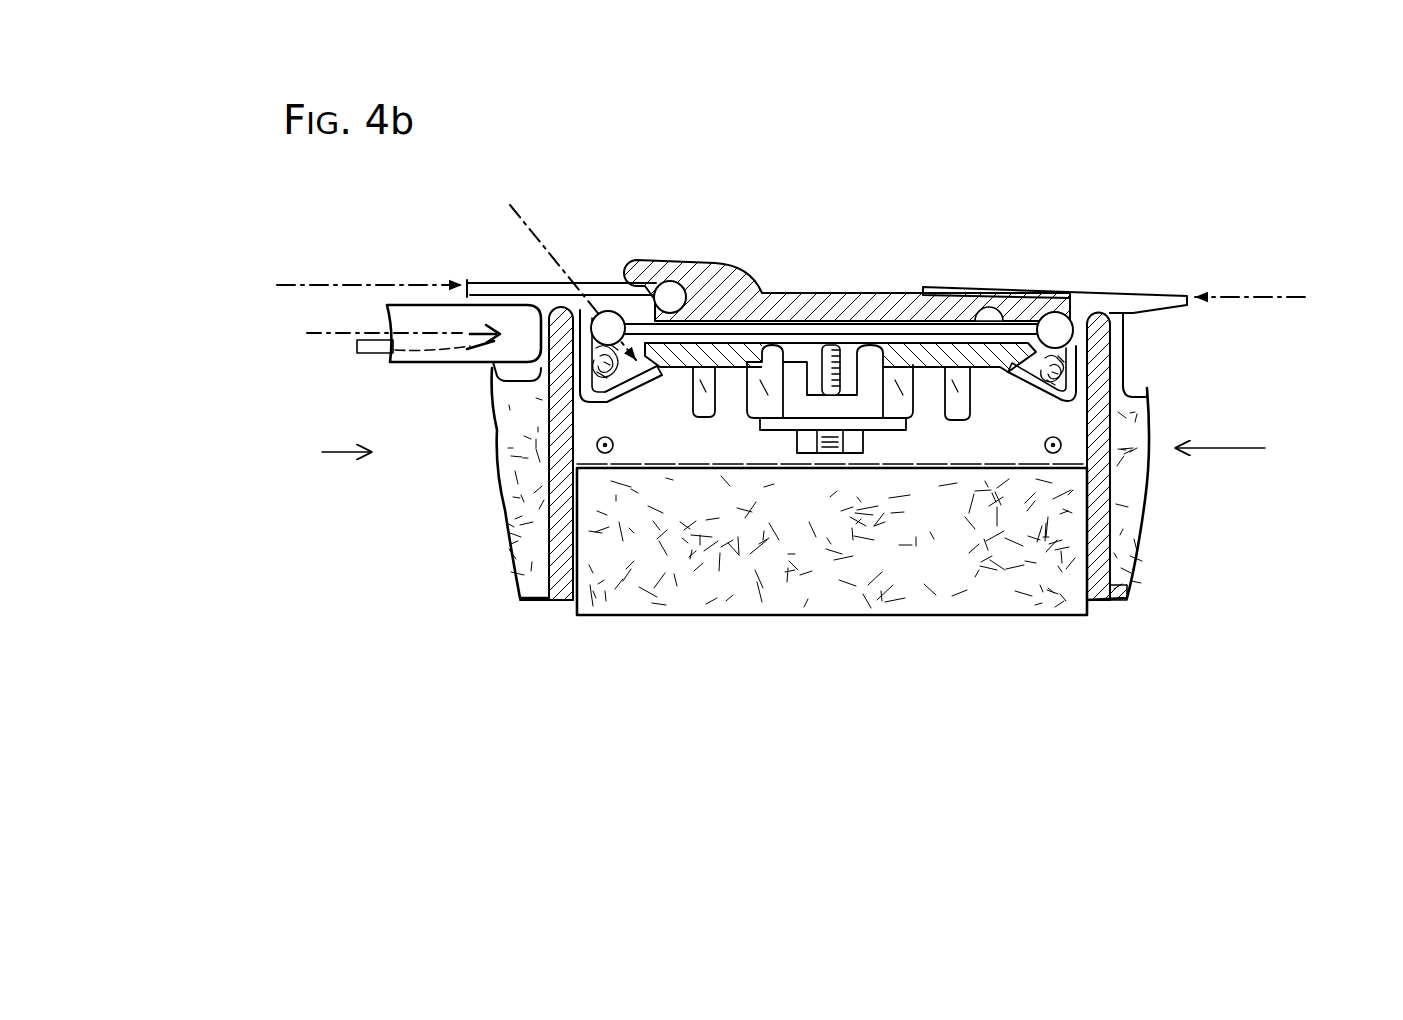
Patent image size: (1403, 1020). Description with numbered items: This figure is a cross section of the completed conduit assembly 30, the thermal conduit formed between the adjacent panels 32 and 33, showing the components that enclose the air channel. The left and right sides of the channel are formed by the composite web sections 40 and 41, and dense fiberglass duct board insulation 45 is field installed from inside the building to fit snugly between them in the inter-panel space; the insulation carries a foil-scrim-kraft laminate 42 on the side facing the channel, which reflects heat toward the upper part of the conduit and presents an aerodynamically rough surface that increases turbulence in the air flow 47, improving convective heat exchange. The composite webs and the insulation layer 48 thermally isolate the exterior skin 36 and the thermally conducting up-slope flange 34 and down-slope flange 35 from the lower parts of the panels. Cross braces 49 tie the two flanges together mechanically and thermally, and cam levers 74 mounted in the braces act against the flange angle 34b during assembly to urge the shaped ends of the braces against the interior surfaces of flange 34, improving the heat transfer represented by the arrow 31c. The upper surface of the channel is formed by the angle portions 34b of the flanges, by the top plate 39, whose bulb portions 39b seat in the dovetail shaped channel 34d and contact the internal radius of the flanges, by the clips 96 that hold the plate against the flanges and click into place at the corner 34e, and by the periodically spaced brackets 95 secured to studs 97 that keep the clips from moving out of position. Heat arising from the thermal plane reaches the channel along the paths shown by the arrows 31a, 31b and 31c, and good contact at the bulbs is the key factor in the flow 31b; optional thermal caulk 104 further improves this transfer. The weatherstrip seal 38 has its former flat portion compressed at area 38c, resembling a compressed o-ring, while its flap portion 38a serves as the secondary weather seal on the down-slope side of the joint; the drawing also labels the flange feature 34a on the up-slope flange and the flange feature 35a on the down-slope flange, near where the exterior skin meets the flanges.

The conduit assembly 30 is at (1246, 132).
The heat flow arrow 31a is at (789, 292).
The heat flow arrow 31b is at (557, 266).
The heat flow arrow 31c is at (381, 337).
The panel 32 is at (328, 453).
The panel 33 is at (1222, 451).
The up-slope flange 34 is at (497, 388).
The bead of first frame member 34a is at (598, 300).
The flange angle portion 34b is at (612, 389).
The dovetail shaped channel 34d is at (556, 345).
The corner of angle portion 34e is at (645, 385).
The down-slope flange 35 is at (1132, 310).
The flange of second frame member 35a is at (1093, 298).
The exterior skin layer 36 is at (507, 281).
The weatherstrip seal 38 is at (896, 303).
The flap portion 38a is at (643, 274).
The compressed seal area 38c is at (1043, 313).
The top plate 39 is at (744, 332).
The bulb portion 39b is at (1052, 330).
The composite web 40 is at (563, 588).
The composite web 41 is at (1102, 590).
The FSK laminate 42 is at (973, 473).
The duct board insulation 45 is at (985, 600).
The air flow 47 is at (1060, 450).
The insulation layer 48 is at (528, 535).
The cross brace 49 is at (392, 358).
The cam lever 74 is at (497, 368).
The bracket 95 is at (763, 426).
The clip 96 is at (966, 414).
The stud 97 is at (836, 344).
The thermal caulk 104 is at (1007, 369).